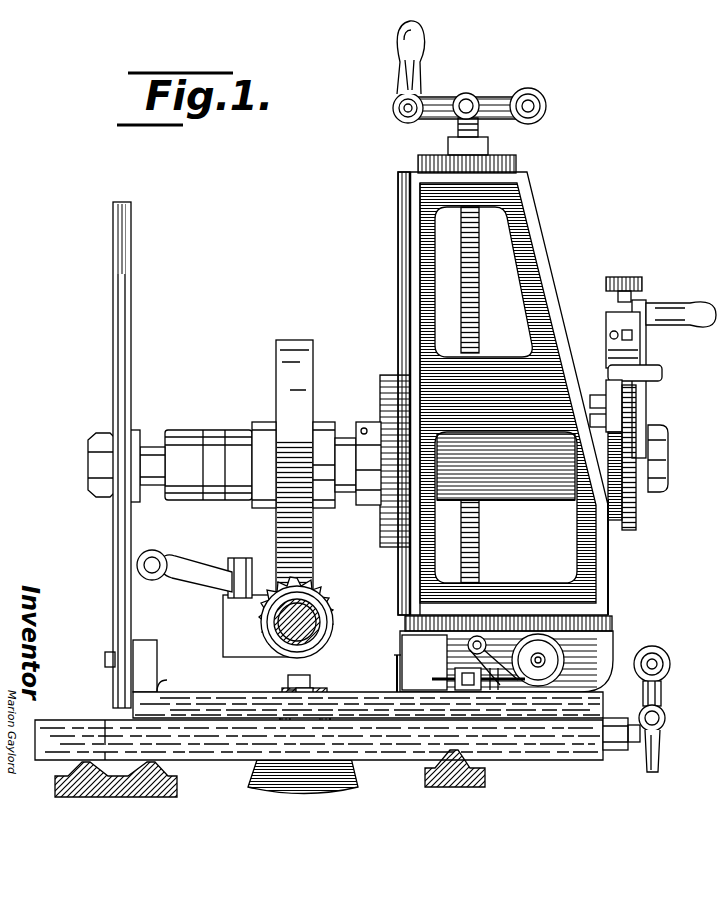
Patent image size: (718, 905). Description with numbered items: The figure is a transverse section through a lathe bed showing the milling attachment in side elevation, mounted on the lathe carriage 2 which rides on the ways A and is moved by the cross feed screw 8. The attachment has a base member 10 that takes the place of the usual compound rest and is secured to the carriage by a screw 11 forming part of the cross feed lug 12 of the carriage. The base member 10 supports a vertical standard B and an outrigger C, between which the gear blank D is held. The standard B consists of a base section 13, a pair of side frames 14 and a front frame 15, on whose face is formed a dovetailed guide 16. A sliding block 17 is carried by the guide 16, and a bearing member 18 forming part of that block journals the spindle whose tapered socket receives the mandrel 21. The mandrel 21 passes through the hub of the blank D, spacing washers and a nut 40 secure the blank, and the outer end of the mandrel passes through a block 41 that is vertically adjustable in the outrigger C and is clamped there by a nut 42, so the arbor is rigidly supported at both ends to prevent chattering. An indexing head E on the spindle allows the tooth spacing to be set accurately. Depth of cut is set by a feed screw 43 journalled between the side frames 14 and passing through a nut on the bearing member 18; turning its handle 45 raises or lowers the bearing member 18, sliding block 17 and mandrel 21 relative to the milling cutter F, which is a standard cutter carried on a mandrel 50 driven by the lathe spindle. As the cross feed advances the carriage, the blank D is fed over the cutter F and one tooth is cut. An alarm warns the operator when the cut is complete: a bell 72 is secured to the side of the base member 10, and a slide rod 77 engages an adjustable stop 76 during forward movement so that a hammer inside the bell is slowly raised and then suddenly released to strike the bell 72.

The handle 45 is at (526, 92).
The standard B is at (538, 296).
The outrigger C is at (119, 314).
The gear blank D is at (288, 363).
The indexing head E is at (641, 421).
The milling cutter F is at (266, 623).
The ways A is at (76, 783).
The feed screw 43 is at (481, 323).
The sliding block 17 is at (410, 390).
The mandrel 21 is at (348, 442).
The nut 40 is at (158, 440).
The nut 42 is at (95, 461).
The block 41 is at (111, 497).
The bearing member 18 is at (542, 487).
The side frames 14 is at (607, 572).
The base section 13 is at (612, 622).
The dovetailed guide 16 is at (407, 567).
The front frame 15 is at (420, 600).
The mandrel 50 is at (308, 613).
The bell 72 is at (538, 660).
The slide rod 77 is at (449, 667).
The adjustable stop 76 is at (400, 641).
The screw 11 is at (286, 690).
The base member 10 is at (360, 690).
The cross feed lug 12 is at (296, 731).
The lathe carriage 2 is at (239, 762).
The cross feed screw 8 is at (318, 768).